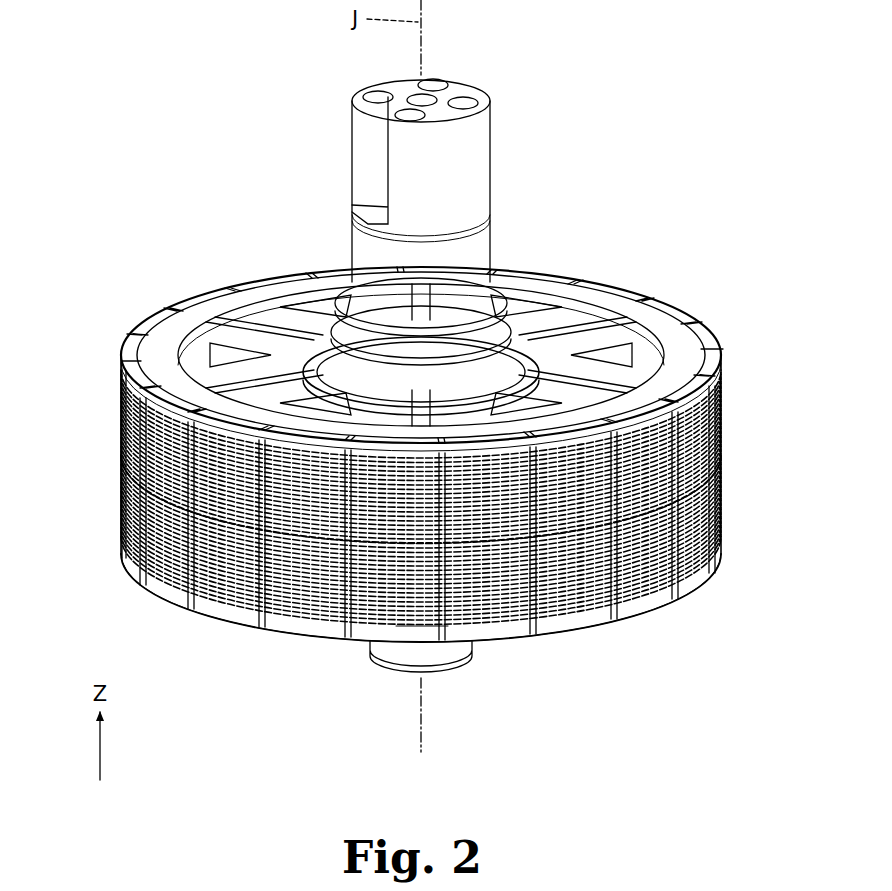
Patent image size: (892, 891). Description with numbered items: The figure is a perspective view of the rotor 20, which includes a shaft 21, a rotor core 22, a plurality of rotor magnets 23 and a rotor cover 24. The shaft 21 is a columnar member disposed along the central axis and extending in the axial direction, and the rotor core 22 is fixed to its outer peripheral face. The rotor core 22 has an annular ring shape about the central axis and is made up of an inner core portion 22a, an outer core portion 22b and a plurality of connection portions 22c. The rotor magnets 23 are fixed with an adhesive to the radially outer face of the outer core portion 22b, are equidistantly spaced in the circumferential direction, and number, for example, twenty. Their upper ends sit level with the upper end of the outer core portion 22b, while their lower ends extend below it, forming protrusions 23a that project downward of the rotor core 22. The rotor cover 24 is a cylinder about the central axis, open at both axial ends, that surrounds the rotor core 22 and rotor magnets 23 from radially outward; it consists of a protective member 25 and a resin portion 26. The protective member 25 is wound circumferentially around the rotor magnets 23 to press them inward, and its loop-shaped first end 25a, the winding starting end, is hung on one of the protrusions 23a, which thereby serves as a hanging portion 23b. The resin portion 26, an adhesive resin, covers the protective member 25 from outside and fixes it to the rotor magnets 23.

The rotor 20 is at (650, 126).
The shaft 21 is at (470, 158).
The rotor core 22 is at (585, 283).
The inner core portion 22a is at (540, 392).
The outer core portion 22b is at (622, 302).
The connection portions 22c is at (668, 340).
The rotor magnet 23 is at (337, 260).
The protrusions 23a is at (487, 630).
The hanging portion 23b is at (400, 633).
The rotor cover 24 is at (530, 642).
The protective member 25 is at (230, 600).
The first end 25a is at (372, 660).
The resin portion 26 is at (632, 630).